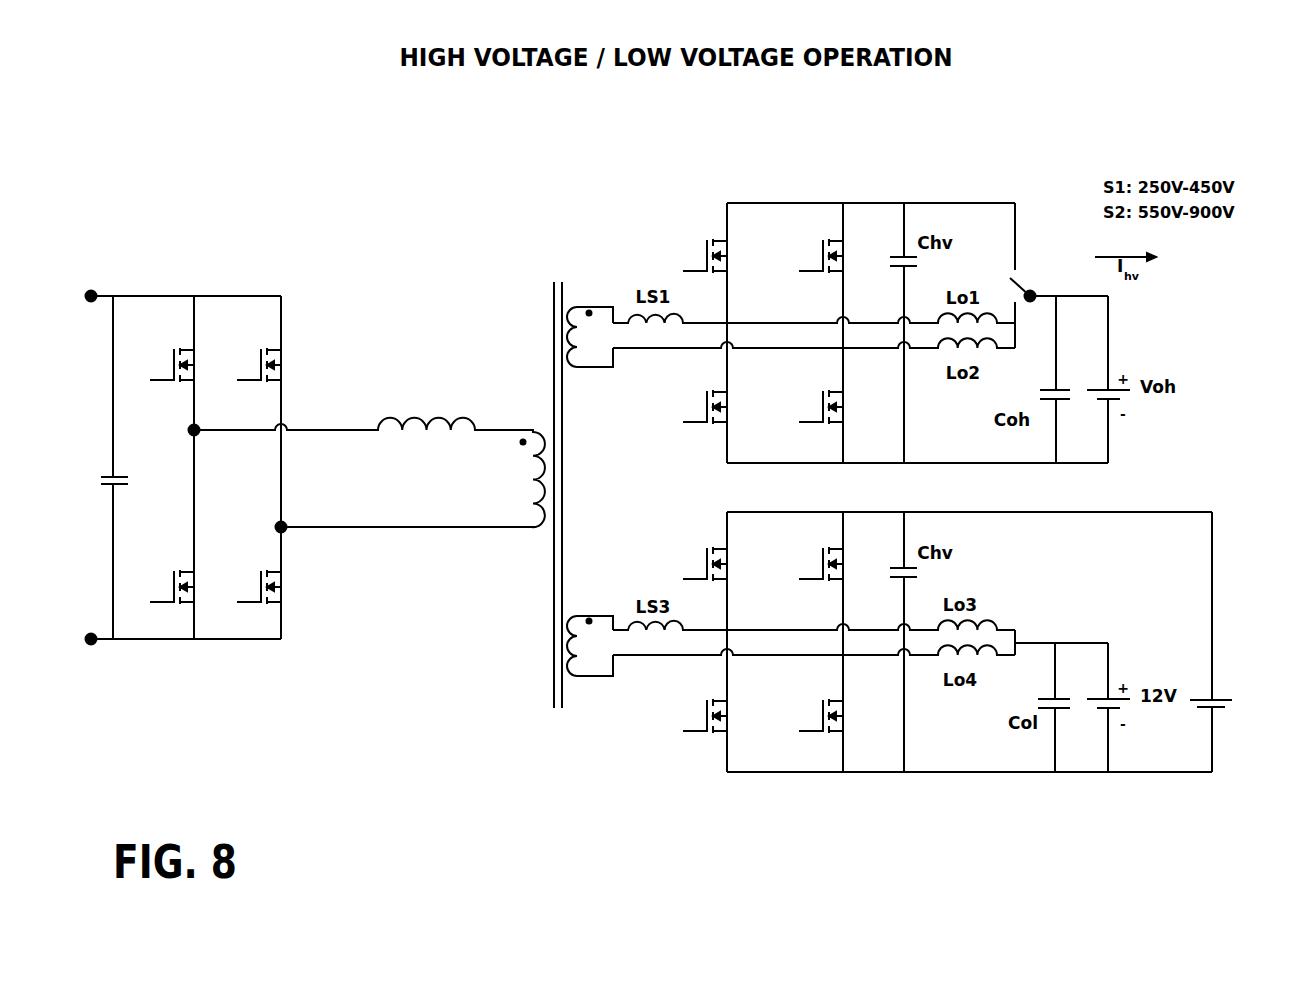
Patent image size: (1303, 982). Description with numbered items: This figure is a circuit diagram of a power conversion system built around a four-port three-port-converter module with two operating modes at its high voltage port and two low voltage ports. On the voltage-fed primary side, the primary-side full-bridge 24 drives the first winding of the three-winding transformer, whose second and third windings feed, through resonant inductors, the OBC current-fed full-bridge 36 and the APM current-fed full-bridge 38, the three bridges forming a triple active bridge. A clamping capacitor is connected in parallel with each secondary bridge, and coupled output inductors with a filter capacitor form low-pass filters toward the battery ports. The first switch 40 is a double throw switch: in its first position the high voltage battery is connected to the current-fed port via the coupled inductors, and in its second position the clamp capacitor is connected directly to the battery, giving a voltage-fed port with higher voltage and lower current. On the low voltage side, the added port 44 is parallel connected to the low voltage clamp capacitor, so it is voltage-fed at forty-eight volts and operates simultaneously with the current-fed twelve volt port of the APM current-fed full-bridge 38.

The primary-side full-bridge 24 is at (398, 248).
The OBC current-fed full-bridge 36 is at (862, 186).
The APM current-fed full-bridge 38 is at (672, 809).
The first switch 40 is at (1037, 289).
The added port 44 is at (1240, 660).